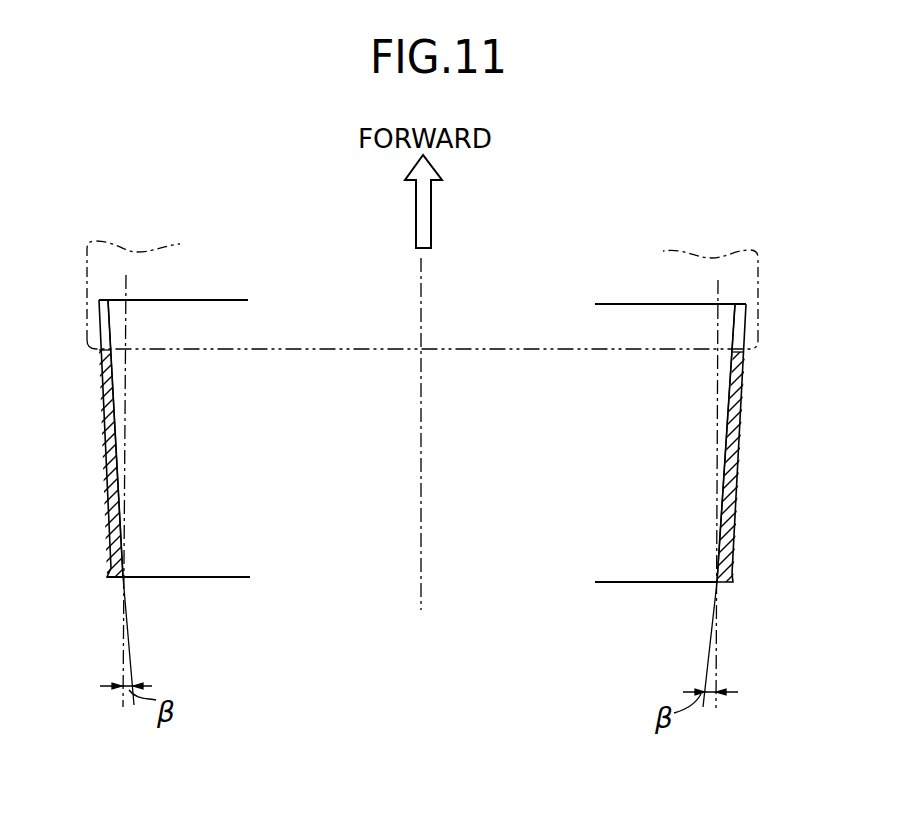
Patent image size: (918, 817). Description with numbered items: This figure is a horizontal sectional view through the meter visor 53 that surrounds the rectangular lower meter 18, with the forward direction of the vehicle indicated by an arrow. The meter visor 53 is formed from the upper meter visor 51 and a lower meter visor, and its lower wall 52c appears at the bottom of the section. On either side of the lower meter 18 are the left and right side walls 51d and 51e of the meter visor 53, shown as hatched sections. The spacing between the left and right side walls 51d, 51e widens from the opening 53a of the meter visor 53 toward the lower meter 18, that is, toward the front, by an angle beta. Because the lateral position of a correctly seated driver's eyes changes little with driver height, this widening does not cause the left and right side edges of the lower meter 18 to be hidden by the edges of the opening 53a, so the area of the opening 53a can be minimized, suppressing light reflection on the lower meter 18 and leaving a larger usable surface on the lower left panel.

The lower meter 18 is at (318, 350).
The upper meter visor 51 is at (100, 470).
The right side wall 51e is at (121, 430).
The left side wall 51d is at (725, 410).
The lower wall 52c is at (212, 560).
The meter visor 53 is at (746, 464).
The opening 53a is at (728, 583).